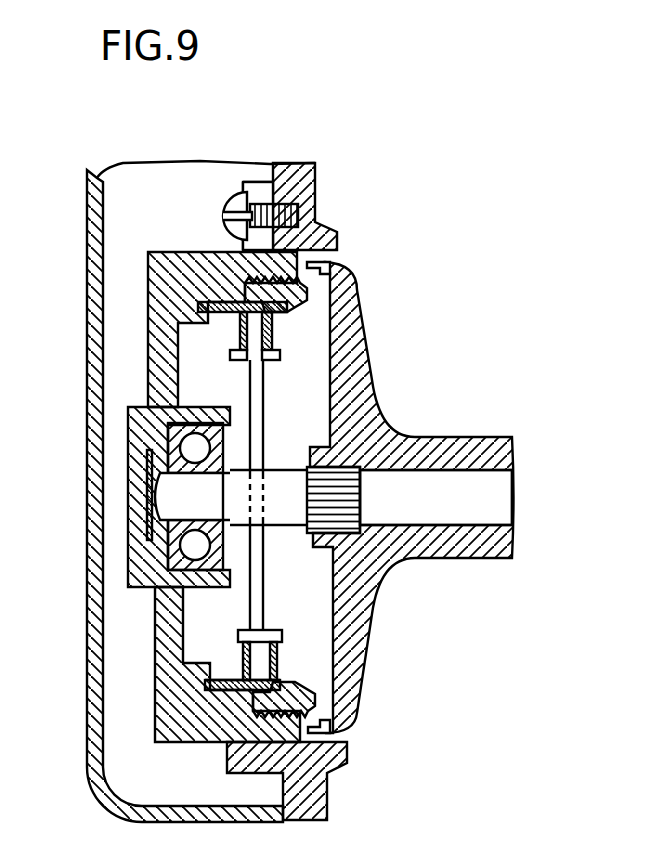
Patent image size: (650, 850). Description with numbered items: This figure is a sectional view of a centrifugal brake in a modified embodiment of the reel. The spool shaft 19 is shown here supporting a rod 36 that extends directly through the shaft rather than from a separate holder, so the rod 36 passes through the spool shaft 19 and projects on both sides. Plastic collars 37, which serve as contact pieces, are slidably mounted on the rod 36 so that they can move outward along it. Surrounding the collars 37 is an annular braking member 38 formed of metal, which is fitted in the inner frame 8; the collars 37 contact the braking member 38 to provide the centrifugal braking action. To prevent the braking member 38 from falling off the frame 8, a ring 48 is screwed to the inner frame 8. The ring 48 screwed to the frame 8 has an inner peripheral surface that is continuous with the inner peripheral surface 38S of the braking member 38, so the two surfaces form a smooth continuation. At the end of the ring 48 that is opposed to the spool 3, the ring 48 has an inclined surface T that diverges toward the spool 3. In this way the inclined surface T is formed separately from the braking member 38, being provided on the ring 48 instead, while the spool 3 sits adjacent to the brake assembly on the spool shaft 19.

The spool 3 is at (488, 450).
The inner frame 8 is at (180, 263).
The spool shaft 19 is at (447, 510).
The rod 36 is at (253, 428).
The collar 37 is at (268, 385).
The braking member 38 is at (233, 316).
The inner peripheral surface 38S is at (222, 677).
The ring 48 is at (307, 292).
The inclined surface T is at (303, 308).